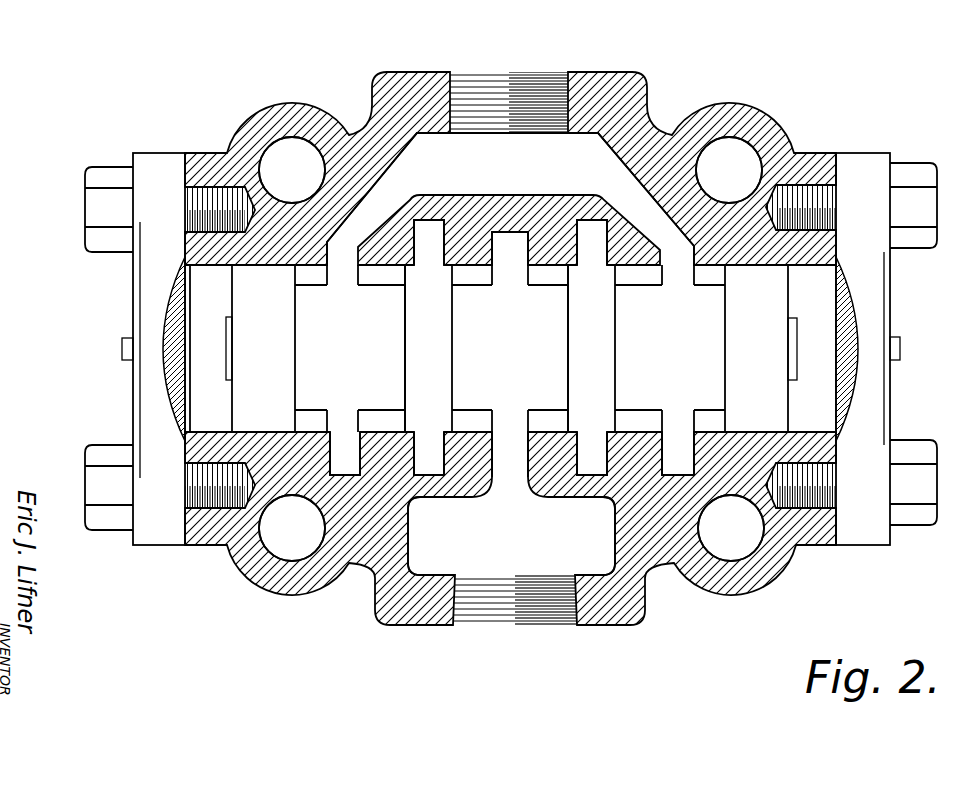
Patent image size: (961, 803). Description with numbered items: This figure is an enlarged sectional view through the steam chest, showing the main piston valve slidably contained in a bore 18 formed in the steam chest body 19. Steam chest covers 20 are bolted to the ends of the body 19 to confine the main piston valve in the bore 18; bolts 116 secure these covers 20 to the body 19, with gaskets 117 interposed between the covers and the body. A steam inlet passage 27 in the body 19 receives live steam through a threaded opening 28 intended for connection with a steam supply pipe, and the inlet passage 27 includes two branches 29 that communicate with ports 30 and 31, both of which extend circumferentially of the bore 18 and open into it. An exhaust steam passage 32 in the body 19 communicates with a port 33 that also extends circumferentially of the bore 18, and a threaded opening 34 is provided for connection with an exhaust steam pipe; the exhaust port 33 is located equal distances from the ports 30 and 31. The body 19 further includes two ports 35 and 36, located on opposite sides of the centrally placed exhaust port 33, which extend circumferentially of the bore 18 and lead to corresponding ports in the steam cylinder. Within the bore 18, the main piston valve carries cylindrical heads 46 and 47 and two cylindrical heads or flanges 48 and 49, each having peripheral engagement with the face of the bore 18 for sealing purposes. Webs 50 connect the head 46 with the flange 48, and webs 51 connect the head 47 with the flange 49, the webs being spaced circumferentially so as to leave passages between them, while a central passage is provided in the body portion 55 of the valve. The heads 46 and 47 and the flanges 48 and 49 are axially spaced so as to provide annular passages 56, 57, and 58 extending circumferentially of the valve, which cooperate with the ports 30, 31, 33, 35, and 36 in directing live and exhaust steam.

The bore 18 is at (198, 388).
The steam chest body 19 is at (632, 73).
The steam chest covers 20 is at (148, 291).
The steam inlet passage 27 is at (429, 146).
The threaded opening 28 is at (463, 80).
The branches 29 is at (363, 222).
The port 30 is at (347, 462).
The port 31 is at (663, 467).
The exhaust steam passage 32 is at (418, 560).
The port 33 is at (502, 238).
The threaded opening 34 is at (487, 615).
The port 35 is at (432, 228).
The port 36 is at (585, 226).
The cylindrical head 46 is at (277, 317).
The cylindrical head 47 is at (743, 339).
The cylindrical head or flange 48 is at (415, 339).
The cylindrical head or flange 49 is at (578, 337).
The webs 50 is at (388, 322).
The webs 51 is at (707, 315).
The body portion 55 is at (543, 315).
The annular passage 56 is at (383, 280).
The annular passage 57 is at (477, 280).
The annular passage 58 is at (640, 280).
The bolts 116 is at (95, 207).
The gaskets 117 is at (837, 170).